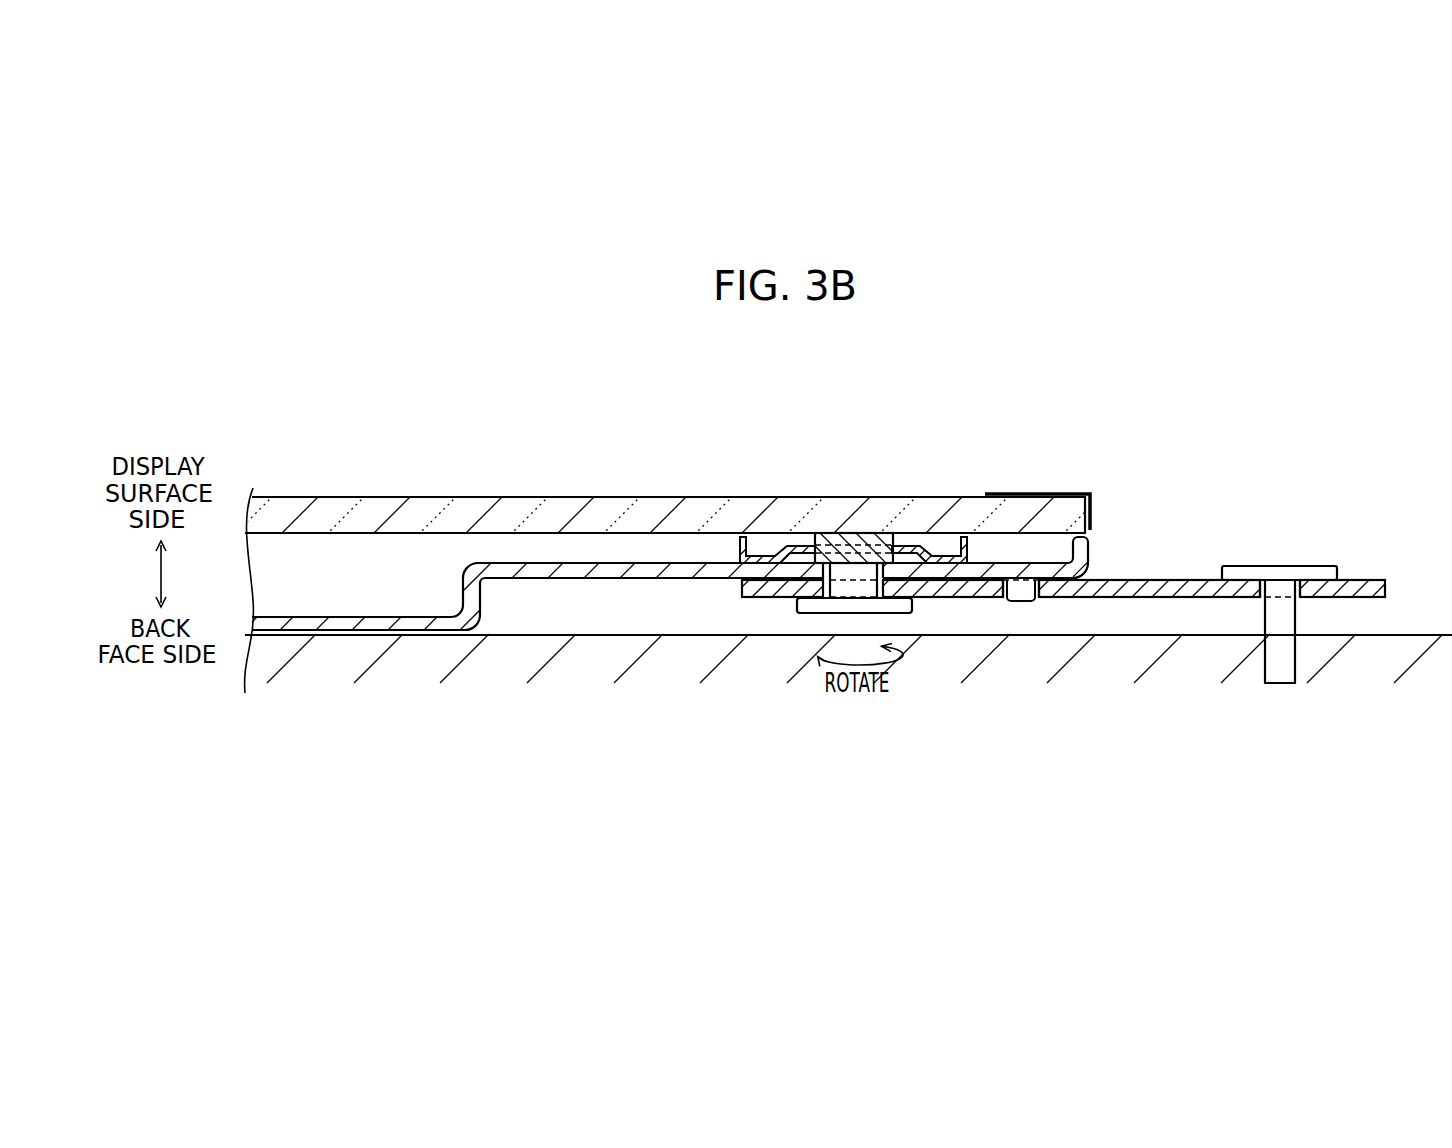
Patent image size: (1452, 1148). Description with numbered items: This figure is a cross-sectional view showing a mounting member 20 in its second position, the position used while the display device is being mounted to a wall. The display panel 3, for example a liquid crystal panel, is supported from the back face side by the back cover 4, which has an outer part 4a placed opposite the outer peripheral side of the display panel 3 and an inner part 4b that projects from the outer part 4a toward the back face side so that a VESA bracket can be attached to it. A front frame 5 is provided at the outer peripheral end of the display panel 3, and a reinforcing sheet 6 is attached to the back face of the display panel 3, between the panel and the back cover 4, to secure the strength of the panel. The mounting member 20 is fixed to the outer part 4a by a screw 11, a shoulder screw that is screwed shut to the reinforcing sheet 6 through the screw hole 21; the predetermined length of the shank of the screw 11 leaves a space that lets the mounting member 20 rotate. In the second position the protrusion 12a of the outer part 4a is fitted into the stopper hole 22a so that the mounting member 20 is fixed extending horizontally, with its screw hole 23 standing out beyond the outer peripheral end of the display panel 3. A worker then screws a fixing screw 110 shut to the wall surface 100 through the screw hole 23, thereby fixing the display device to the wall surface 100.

The display panel 3 is at (553, 497).
The back cover 4 is at (1089, 553).
The outer part 4a is at (628, 580).
The inner part 4b is at (380, 631).
The front frame 5 is at (1036, 493).
The reinforcing sheet 6 is at (910, 535).
The screw 11 is at (898, 613).
The protrusion 12a is at (1024, 601).
The mounting member 20 is at (770, 598).
The screw hole 21 is at (824, 598).
The stopper hole 22a is at (1040, 604).
The screw hole 23 is at (1300, 604).
The wall surface 100 is at (1422, 634).
The fixing screw 110 is at (1278, 566).